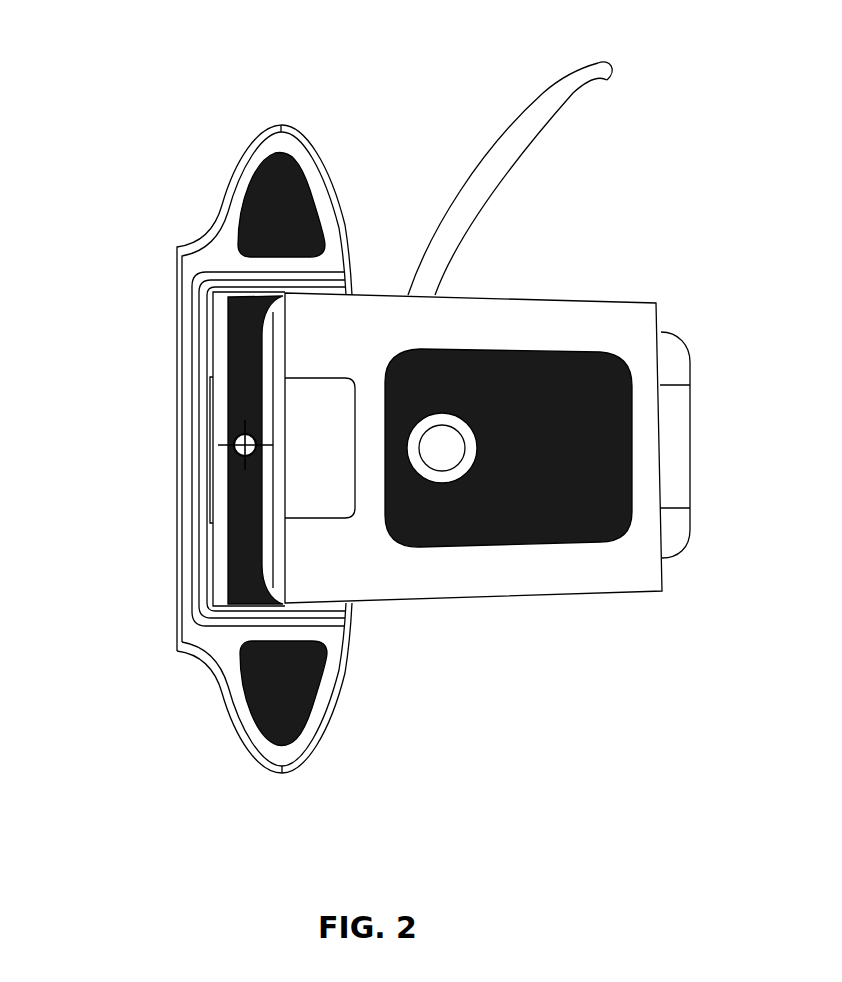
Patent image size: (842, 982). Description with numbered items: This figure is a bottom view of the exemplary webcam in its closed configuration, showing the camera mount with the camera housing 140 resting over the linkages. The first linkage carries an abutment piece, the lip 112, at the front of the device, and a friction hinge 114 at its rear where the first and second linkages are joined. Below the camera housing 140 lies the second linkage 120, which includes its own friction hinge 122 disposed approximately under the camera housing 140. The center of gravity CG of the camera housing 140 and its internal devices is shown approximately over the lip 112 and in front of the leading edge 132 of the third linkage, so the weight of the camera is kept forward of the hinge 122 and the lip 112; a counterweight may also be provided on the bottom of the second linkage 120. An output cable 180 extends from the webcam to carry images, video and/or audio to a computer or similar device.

The camera housing 140 is at (242, 183).
The output cable 180 is at (492, 173).
The lip 112 is at (220, 368).
The center of gravity CG is at (232, 436).
The leading edge 132 is at (267, 550).
The friction hinge 122 is at (315, 478).
The second linkage 120 is at (508, 585).
The friction hinge 114 is at (672, 363).